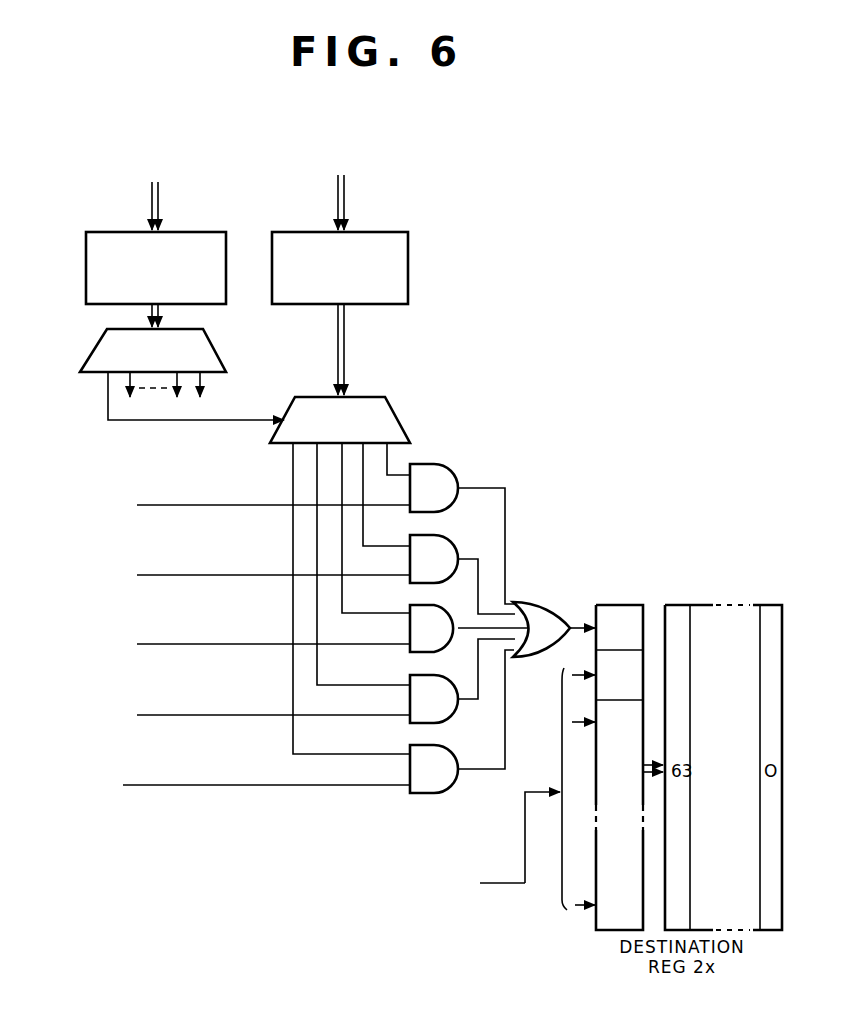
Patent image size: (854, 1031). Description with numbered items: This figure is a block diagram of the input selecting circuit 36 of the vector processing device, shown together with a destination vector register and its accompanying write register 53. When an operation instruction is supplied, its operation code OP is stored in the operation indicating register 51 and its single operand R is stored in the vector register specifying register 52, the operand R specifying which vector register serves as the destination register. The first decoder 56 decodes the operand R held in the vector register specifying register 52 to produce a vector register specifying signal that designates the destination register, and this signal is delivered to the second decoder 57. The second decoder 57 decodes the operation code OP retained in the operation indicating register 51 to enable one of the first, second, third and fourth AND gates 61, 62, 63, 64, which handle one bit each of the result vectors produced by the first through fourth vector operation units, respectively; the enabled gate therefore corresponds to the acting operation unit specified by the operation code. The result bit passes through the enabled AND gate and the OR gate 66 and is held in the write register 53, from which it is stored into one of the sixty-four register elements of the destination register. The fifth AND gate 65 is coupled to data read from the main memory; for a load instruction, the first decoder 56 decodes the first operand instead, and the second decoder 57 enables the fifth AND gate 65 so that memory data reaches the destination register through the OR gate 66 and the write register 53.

The input selecting circuit 36 is at (620, 452).
The operation indicating register 51 is at (404, 232).
The vector register specifying register 52 is at (208, 232).
The write register 53 is at (603, 605).
The first decoder 56 is at (222, 362).
The second decoder 57 is at (405, 432).
The first AND gate 61 is at (450, 468).
The second AND gate 62 is at (450, 538).
The third AND gate 63 is at (410, 606).
The fourth AND gate 64 is at (410, 676).
The fifth AND gate 65 is at (410, 746).
The OR gate 66 is at (557, 603).